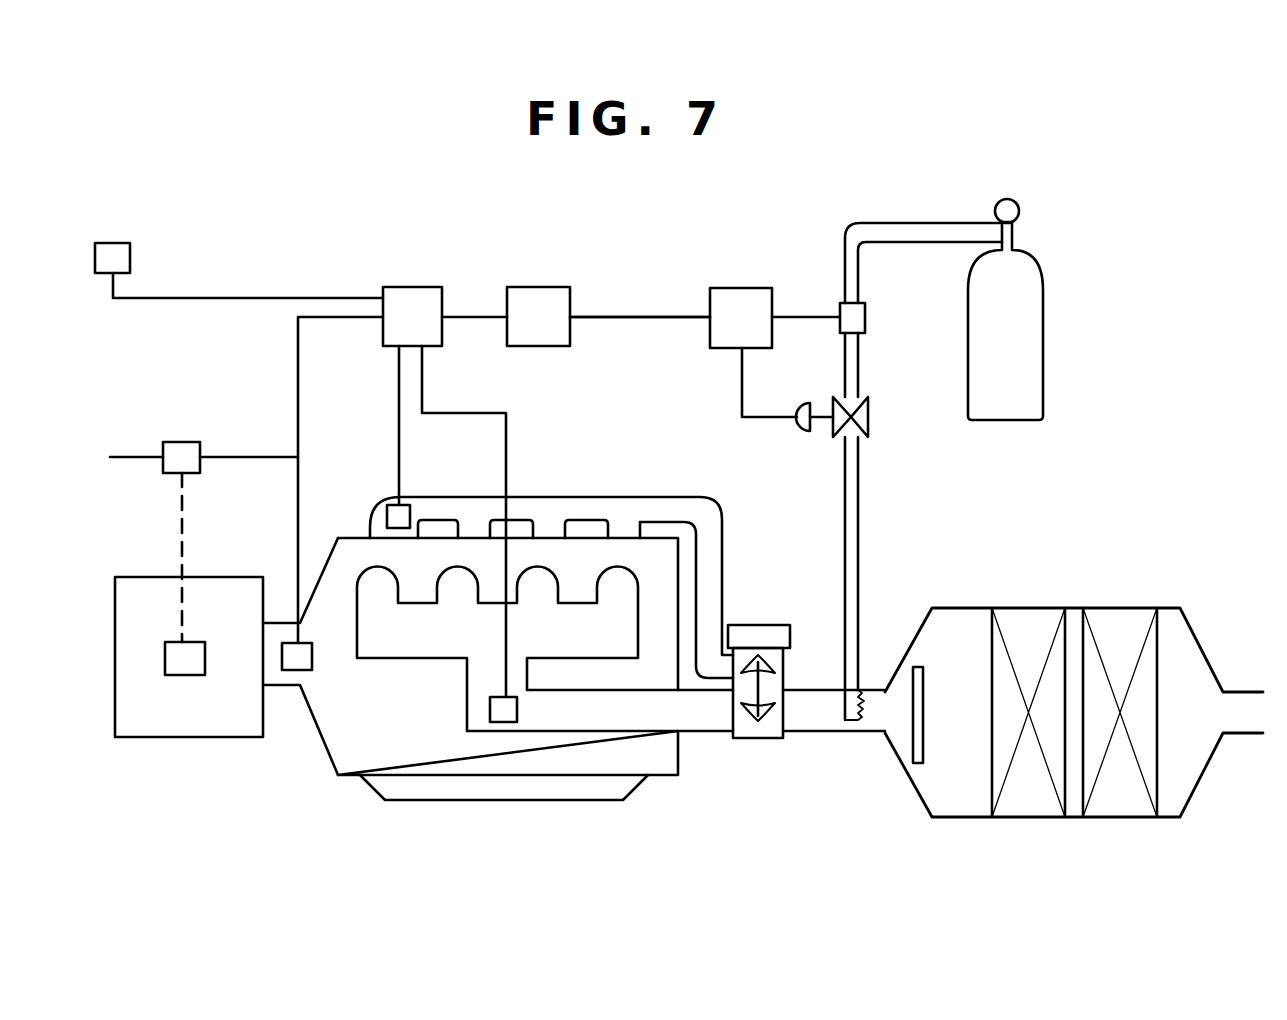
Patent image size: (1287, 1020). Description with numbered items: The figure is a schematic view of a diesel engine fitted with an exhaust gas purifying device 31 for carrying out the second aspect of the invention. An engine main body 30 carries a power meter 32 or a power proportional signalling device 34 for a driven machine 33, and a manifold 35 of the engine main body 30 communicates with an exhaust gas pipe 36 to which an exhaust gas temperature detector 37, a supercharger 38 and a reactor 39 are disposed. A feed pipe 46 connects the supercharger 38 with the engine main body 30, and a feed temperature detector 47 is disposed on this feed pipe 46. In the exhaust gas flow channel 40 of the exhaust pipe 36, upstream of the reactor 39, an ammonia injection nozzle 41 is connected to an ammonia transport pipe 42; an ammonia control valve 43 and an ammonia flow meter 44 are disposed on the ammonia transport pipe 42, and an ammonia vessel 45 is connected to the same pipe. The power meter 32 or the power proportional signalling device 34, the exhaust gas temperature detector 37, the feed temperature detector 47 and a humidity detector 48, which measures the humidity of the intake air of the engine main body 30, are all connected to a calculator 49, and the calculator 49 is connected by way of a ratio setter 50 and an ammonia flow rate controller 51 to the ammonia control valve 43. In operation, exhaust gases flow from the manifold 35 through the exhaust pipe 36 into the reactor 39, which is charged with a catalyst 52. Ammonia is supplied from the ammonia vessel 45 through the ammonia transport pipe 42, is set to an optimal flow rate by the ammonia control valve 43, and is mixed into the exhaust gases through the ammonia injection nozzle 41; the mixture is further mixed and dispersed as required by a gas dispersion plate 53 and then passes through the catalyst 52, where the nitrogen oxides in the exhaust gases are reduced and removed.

The engine main body 30 is at (340, 777).
The exhaust gas purifying device 31 is at (638, 298).
The power meter 32 is at (290, 672).
The driven machine 33 is at (182, 676).
The power proportional signalling device 34 is at (185, 442).
The manifold 35 is at (543, 567).
The exhaust gas pipe 36 is at (585, 732).
The exhaust gas temperature detector 37 is at (490, 723).
The supercharger 38 is at (758, 625).
The reactor 39 is at (1115, 608).
The exhaust gas flow channel 40 is at (806, 710).
The ammonia injection nozzle 41 is at (868, 718).
The ammonia transport pipe 42 is at (858, 556).
The ammonia control valve 43 is at (868, 430).
The ammonia flow meter 44 is at (866, 325).
The ammonia vessel 45 is at (1043, 320).
The feed pipe 46 is at (680, 497).
The feed temperature detector 47 is at (384, 518).
The humidity detector 48 is at (113, 243).
The calculator 49 is at (415, 287).
The ratio setter 50 is at (542, 287).
The ammonia flow rate controller 51 is at (742, 288).
The catalyst 52 is at (1025, 625).
The gas dispersion plate 53 is at (923, 745).